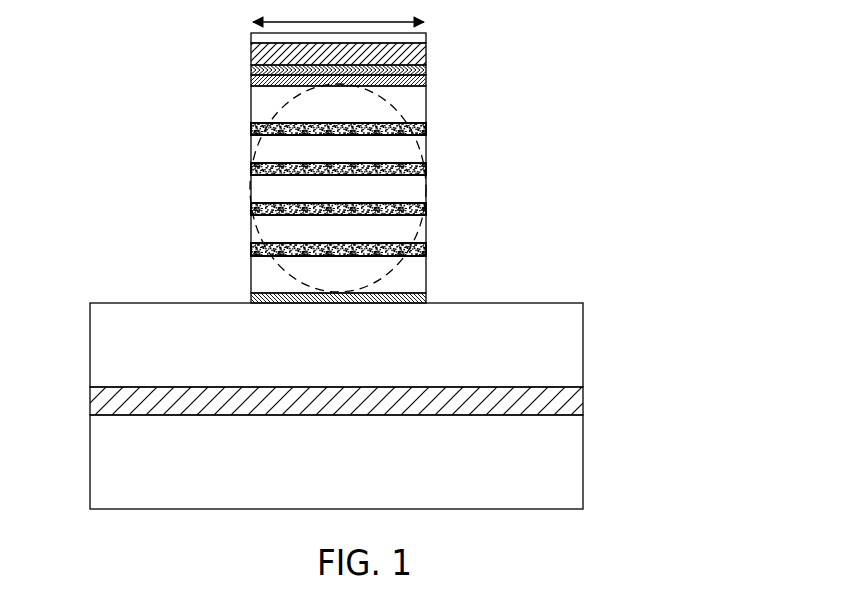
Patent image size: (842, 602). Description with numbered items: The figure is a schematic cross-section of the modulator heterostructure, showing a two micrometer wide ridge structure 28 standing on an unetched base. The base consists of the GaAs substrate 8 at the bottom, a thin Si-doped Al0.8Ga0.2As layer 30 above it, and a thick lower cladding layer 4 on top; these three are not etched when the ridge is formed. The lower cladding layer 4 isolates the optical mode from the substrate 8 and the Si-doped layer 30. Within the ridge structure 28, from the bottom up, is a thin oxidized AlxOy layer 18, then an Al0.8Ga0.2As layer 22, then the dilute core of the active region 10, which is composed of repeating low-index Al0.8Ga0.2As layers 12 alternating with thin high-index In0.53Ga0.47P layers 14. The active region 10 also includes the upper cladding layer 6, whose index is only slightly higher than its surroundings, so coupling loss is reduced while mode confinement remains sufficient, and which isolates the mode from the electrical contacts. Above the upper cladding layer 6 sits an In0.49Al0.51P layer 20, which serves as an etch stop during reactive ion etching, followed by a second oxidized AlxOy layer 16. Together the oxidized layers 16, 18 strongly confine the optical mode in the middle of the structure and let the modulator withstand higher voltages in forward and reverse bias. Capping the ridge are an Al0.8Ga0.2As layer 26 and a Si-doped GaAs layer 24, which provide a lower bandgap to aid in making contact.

The ridge structure 28 is at (106, 88).
The Si-doped GaAs layer 24 is at (427, 36).
The Al0.8Ga0.2As layer 26 is at (251, 53).
The AlxOy layer 16 is at (427, 70).
The In0.49Al0.51P layer 20 is at (251, 80).
The upper cladding layer 6 is at (428, 104).
The high-index In0.53Ga0.47P layers 14 is at (427, 129).
The low-index Al0.8Ga0.2As layers 12 is at (251, 149).
The active region 10 is at (438, 189).
The Al0.8Ga0.2As layer 22 is at (251, 275).
The AlxOy layer 18 is at (251, 298).
The lower cladding layer 4 is at (90, 347).
The Si-doped Al0.8Ga0.2As layer 30 is at (90, 401).
The GaAs substrate 8 is at (90, 463).